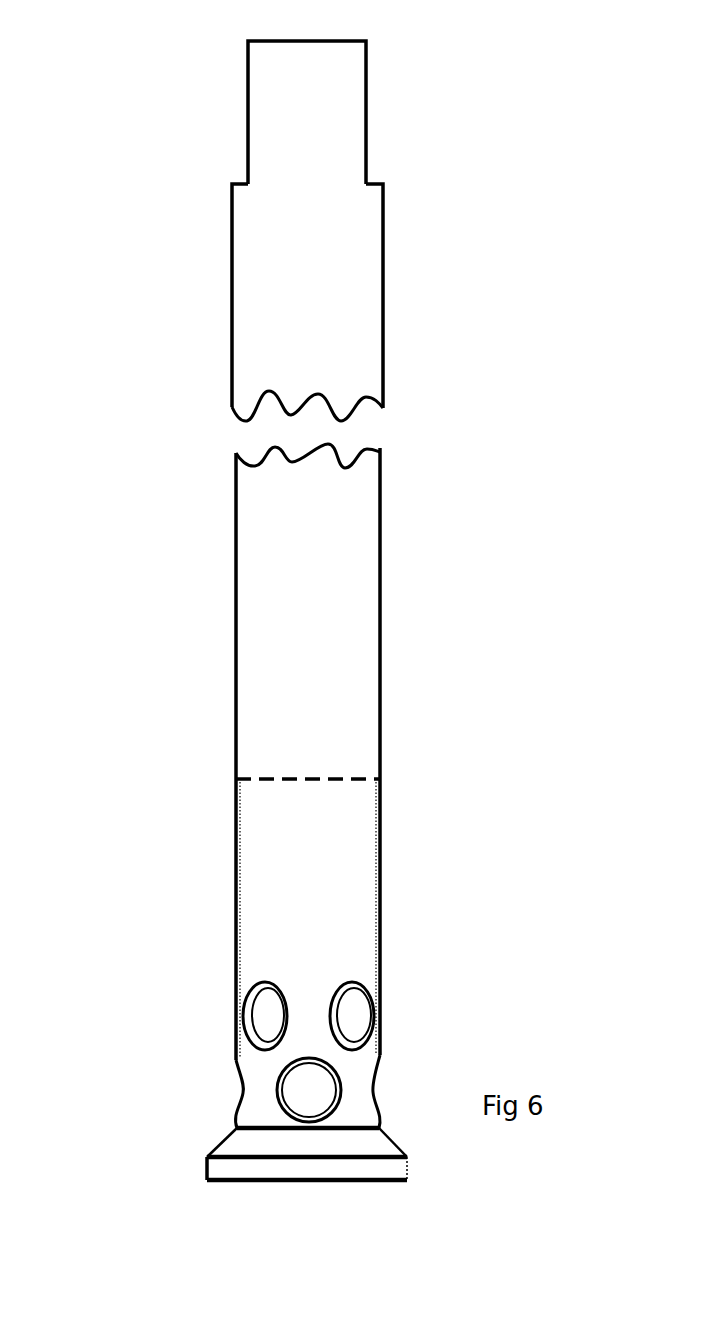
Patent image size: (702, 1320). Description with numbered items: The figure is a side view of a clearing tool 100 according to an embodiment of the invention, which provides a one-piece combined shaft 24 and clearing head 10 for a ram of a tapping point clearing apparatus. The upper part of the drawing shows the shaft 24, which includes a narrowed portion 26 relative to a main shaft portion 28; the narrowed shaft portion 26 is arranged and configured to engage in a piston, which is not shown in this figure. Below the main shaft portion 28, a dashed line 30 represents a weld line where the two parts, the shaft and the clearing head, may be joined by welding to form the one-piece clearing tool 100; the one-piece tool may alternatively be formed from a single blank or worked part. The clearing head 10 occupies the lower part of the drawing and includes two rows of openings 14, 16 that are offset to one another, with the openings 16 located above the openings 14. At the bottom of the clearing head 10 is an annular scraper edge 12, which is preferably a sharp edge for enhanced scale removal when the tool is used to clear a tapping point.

The clearing tool 100 is at (436, 545).
The narrowed portion 26 is at (265, 132).
The shaft 24 is at (271, 303).
The main shaft portion 28 is at (240, 533).
The dashed line 30 is at (319, 780).
The clearing head 10 is at (256, 923).
The openings 16 is at (254, 1024).
The openings 14 is at (297, 1098).
The annular scraper edge 12 is at (207, 1178).